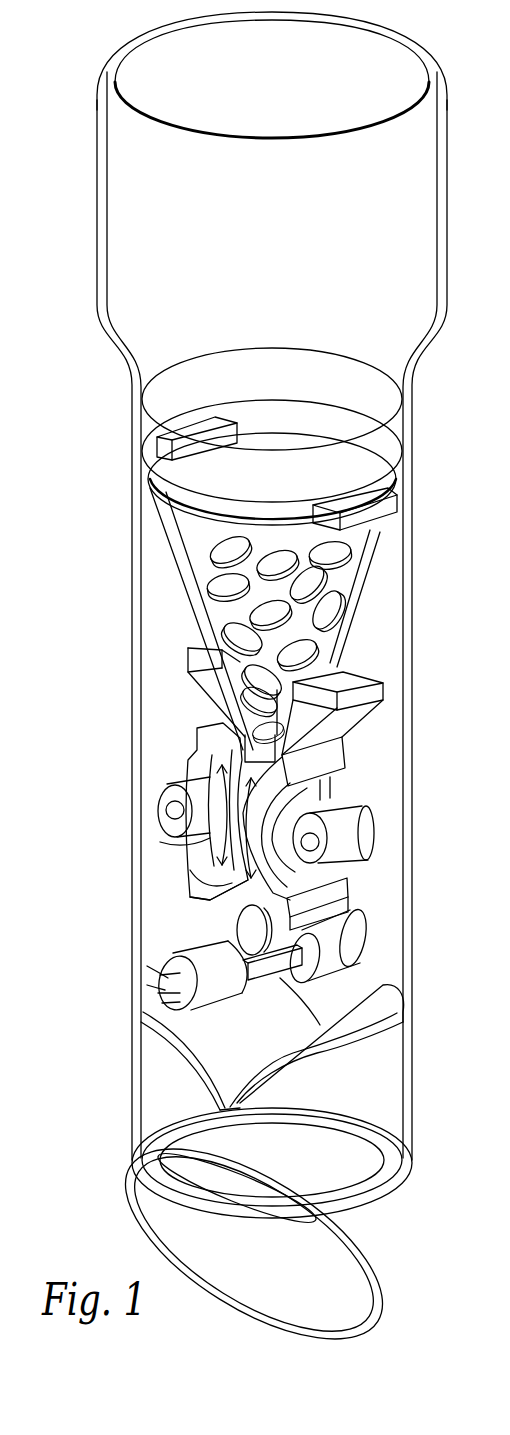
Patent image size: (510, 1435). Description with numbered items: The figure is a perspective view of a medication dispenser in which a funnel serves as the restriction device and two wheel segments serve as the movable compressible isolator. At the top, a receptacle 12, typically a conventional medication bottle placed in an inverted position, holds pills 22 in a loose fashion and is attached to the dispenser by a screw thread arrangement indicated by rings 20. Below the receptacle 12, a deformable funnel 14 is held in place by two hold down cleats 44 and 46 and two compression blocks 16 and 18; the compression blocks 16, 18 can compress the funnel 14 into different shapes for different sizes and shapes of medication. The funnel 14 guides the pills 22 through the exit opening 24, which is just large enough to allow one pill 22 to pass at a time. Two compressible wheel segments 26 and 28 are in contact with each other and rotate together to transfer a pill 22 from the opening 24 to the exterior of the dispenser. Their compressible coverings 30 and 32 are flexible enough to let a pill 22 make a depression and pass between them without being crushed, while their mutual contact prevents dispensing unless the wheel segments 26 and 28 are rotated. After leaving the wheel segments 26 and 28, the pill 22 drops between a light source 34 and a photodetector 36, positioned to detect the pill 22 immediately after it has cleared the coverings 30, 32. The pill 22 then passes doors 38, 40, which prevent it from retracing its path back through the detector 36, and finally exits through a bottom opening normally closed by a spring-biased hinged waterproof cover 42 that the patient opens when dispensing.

The receptacle 12 is at (137, 255).
The deformable funnel 14 is at (176, 549).
The compression block 16 is at (368, 698).
The compression block 18 is at (192, 660).
The rings 20 is at (142, 455).
The pills 22 is at (330, 637).
The exit opening 24 is at (225, 743).
The compressible wheel segment 26 is at (165, 832).
The compressible wheel segment 28 is at (328, 793).
The compressible covering 30 is at (197, 888).
The compressible covering 32 is at (347, 903).
The light source 34 is at (178, 1000).
The photodetector 36 is at (355, 962).
The door 38 is at (225, 1058).
The door 40 is at (363, 1020).
The hinged waterproof cover 42 is at (348, 1286).
The hold down cleat 44 is at (383, 511).
The hold down cleat 46 is at (188, 447).